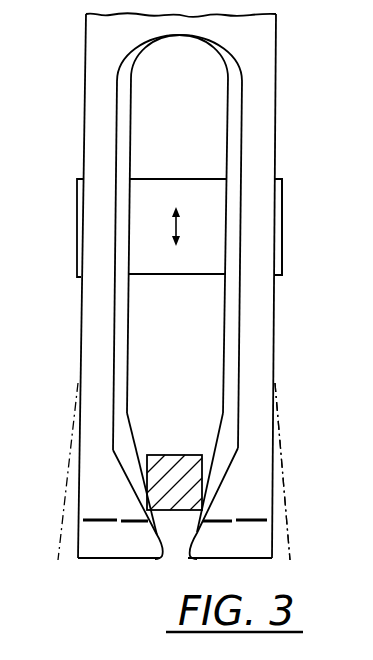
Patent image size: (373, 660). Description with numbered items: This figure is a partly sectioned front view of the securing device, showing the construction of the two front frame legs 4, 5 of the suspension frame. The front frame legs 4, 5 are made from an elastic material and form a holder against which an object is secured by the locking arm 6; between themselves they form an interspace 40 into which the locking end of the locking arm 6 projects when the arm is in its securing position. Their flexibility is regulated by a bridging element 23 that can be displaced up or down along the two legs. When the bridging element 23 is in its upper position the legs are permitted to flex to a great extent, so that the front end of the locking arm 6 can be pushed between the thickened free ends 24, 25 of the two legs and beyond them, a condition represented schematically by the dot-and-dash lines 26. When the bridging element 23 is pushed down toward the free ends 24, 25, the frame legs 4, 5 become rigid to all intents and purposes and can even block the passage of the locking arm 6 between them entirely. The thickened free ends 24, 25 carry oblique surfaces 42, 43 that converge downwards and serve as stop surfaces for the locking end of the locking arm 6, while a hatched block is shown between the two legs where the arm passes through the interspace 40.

The front frame leg 4 is at (97, 293).
The front frame leg 5 is at (259, 298).
The locking arm 6 is at (188, 455).
The bridging element 23 is at (280, 230).
The thickened free end 24 is at (100, 503).
The thickened free end 25 is at (250, 503).
The dot-and-dash lines 26 is at (282, 452).
The interspace 40 is at (210, 340).
The oblique surface 42 is at (137, 437).
The oblique surface 43 is at (207, 462).